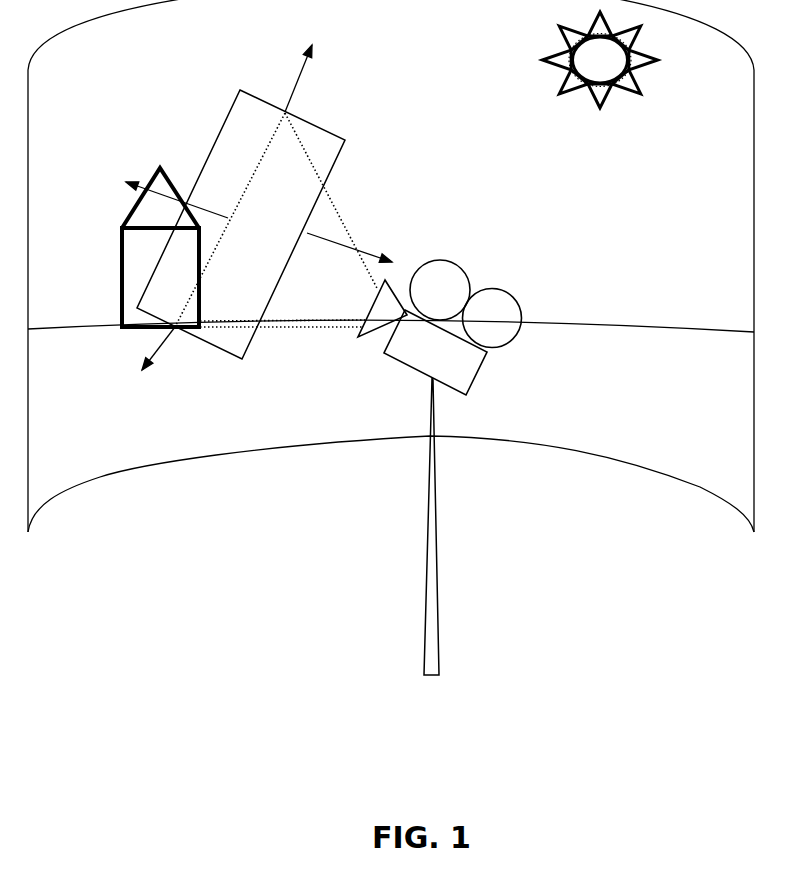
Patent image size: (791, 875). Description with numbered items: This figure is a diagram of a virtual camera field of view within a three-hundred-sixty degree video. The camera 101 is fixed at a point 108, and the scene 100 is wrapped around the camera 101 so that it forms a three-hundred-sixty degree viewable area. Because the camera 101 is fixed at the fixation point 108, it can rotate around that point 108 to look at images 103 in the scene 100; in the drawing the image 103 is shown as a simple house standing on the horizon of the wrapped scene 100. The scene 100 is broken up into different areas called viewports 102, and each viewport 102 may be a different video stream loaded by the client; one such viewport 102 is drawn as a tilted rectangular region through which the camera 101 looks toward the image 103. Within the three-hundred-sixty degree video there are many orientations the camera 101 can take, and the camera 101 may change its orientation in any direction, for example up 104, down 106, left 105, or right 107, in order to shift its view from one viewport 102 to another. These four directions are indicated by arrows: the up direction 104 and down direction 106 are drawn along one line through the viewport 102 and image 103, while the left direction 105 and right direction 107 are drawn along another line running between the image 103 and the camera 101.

The scene 100 is at (137, 64).
The camera 101 is at (482, 367).
The viewport 102 is at (319, 131).
The image 103 is at (121, 236).
The up orientation change 104 is at (316, 46).
The left orientation change 105 is at (120, 180).
The down orientation change 106 is at (140, 368).
The right orientation change 107 is at (388, 256).
The fixation point 108 is at (437, 458).